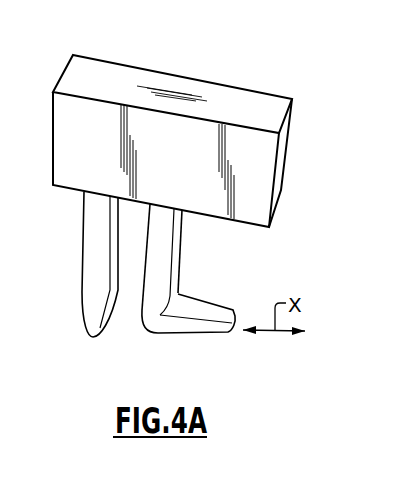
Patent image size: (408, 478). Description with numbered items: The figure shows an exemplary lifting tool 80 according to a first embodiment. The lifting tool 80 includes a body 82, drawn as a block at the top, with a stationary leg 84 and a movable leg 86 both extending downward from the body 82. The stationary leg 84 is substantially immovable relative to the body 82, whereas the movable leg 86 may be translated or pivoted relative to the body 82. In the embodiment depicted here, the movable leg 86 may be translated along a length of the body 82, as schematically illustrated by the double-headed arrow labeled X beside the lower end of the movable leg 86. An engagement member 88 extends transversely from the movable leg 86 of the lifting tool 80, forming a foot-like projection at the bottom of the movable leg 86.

The lifting tool 80 is at (189, 62).
The body 82 is at (258, 178).
The stationary leg 84 is at (96, 242).
The movable leg 86 is at (163, 252).
The engagement member 88 is at (202, 328).